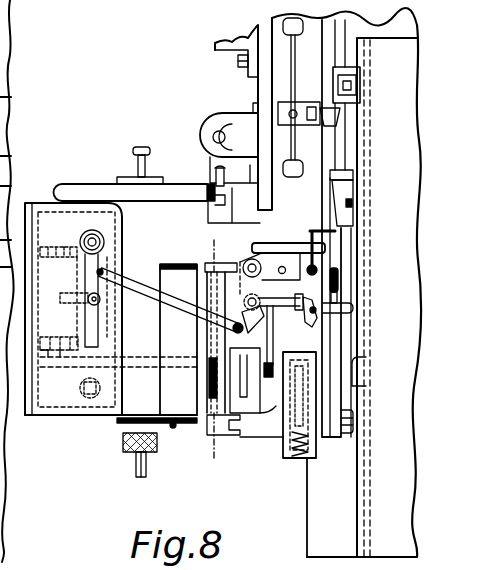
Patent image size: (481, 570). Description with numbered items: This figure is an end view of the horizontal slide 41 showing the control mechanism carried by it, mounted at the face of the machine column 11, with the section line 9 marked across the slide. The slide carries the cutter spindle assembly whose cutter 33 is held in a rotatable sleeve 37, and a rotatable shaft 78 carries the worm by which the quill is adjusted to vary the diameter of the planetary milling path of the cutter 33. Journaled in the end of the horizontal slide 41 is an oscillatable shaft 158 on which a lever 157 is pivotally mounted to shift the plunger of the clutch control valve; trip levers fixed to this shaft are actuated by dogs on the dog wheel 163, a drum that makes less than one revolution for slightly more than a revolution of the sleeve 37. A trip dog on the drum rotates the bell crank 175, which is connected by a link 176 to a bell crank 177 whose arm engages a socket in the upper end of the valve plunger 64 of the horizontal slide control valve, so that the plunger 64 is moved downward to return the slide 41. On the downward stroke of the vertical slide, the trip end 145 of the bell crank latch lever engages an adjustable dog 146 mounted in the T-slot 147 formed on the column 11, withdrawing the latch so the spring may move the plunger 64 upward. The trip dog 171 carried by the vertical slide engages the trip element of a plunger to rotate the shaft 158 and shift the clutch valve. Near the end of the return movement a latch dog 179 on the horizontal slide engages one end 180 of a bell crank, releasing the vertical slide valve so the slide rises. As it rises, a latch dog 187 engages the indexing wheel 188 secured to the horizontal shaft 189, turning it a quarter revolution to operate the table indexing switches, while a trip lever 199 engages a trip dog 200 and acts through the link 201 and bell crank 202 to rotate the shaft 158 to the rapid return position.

The column 11 is at (0, 20).
The indexing wheel 188 is at (347, 82).
The horizontal shaft 189 is at (358, 84).
The latch dog 187 is at (337, 113).
The trip dog 200 is at (337, 193).
The trip lever 199 is at (323, 228).
The link 201 is at (285, 247).
The end of bell crank 180 is at (217, 174).
The latch dog 179 is at (213, 208).
The oscillatable shaft 158 is at (115, 417).
The dog wheel 163 is at (40, 257).
The bell crank 175 is at (88, 293).
The link 176 is at (137, 300).
The section line 9- 9 is at (230, 248).
The bell crank 202 is at (246, 259).
The bell crank 177 is at (271, 301).
The horizontal slide 41 is at (272, 333).
The valve plunger 64 is at (320, 337).
The trip end of bell crank 145 is at (347, 326).
The adjustable dog 146 is at (364, 372).
The T-slot 147 is at (362, 395).
The trip dog 171 is at (223, 436).
The cutter 33 is at (133, 470).
The lever 157 is at (63, 412).
The rotatable sleeve 37 is at (98, 420).
The rotatable shaft 78 is at (172, 430).